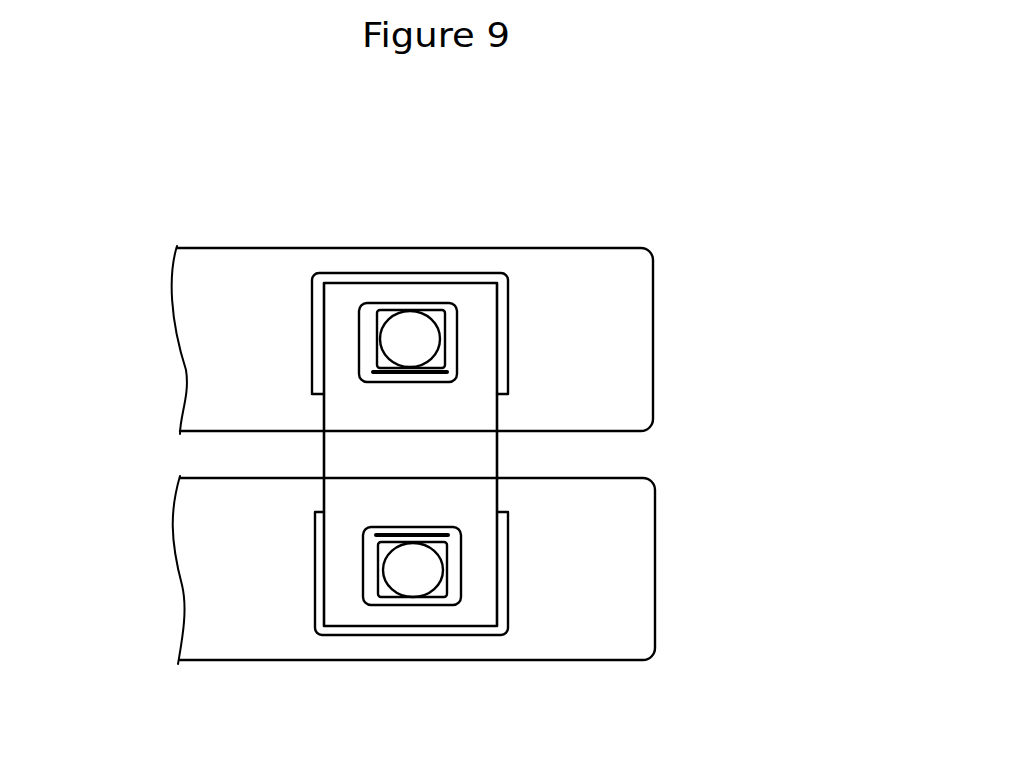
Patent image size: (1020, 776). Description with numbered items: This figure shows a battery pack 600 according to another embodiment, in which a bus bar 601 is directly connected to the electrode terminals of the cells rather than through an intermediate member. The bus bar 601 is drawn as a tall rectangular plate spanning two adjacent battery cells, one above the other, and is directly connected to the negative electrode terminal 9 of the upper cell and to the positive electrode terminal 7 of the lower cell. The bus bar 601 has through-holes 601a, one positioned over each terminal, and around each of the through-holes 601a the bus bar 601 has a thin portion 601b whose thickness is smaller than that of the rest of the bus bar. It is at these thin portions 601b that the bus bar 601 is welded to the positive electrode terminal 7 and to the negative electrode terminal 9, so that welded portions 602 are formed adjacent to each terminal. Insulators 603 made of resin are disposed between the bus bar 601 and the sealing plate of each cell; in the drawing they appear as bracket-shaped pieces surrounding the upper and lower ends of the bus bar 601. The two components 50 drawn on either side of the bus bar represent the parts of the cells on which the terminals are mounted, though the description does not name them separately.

The battery pack 600 is at (383, 118).
The bus bar 601 is at (355, 444).
The through-hole 601a is at (377, 318).
The thin portion 601b is at (451, 330).
The welded portion 602 is at (450, 383).
The insulator 603 is at (473, 273).
The negative electrode terminal 9 is at (413, 337).
The positive electrode terminal 7 is at (413, 583).
The circuit board 50 is at (220, 382).